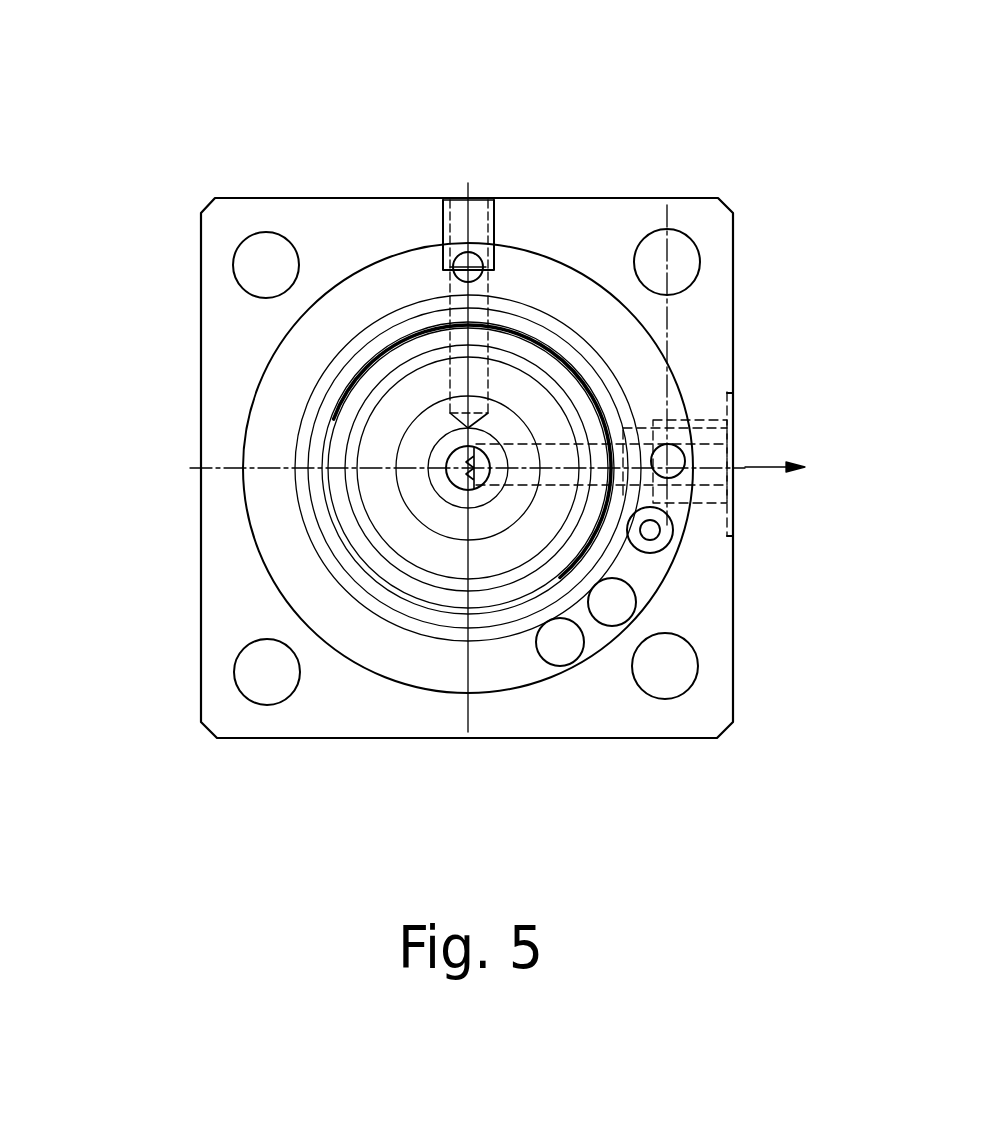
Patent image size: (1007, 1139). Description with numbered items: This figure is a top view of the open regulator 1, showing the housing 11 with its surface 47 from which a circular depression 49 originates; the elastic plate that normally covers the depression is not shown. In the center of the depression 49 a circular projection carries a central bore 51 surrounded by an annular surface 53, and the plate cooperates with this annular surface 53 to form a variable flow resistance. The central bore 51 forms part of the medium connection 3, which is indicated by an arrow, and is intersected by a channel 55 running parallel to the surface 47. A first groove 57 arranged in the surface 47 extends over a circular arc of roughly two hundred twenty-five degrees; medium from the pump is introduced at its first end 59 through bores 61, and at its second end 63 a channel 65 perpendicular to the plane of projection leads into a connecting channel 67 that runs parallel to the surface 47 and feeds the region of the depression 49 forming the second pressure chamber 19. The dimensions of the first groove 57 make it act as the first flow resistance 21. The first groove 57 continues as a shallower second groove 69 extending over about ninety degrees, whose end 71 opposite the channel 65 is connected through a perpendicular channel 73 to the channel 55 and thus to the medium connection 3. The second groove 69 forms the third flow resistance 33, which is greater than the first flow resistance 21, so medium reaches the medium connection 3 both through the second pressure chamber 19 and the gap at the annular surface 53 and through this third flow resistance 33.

The regulator 1 is at (299, 140).
The medium connection 3 is at (786, 463).
The housing 11 is at (226, 358).
The second pressure chamber 19 is at (420, 414).
The first flow resistance 21 is at (346, 676).
The third flow resistance 33 is at (552, 245).
The surface 47 is at (232, 572).
The circular depression 49 is at (446, 462).
The central bore 51 is at (446, 464).
The annular surface 53 is at (440, 479).
The channel 55 is at (572, 445).
The first groove 57 is at (275, 355).
The first end 59 is at (637, 591).
The bores 61 is at (612, 613).
The second end 63 is at (433, 240).
The channel 65 is at (480, 205).
The connecting channel 67 is at (500, 230).
The second groove 69 is at (587, 265).
The end 71 is at (730, 393).
The channel 73 is at (684, 470).